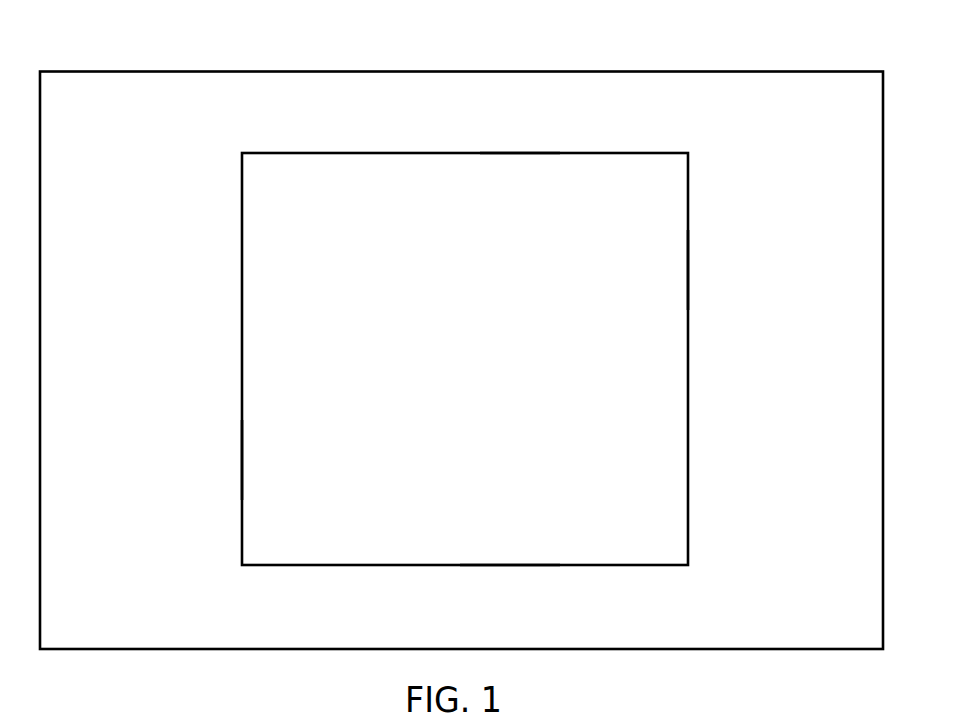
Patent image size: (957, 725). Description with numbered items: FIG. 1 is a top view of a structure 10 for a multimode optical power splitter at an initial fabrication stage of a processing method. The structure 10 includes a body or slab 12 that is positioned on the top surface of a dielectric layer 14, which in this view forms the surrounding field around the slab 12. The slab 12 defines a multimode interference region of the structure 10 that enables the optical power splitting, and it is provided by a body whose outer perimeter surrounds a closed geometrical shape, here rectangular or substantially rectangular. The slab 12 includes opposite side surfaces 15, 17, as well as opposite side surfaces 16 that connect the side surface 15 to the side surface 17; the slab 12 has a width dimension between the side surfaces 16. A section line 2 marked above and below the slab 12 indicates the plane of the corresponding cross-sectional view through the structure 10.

The structure 10 is at (215, 143).
The slab 12 is at (338, 343).
The dielectric layer 14 is at (138, 612).
The side surface 15 is at (242, 465).
The side surfaces 16 is at (522, 152).
The side surface 17 is at (688, 269).
The section line 2 is at (270, 113).